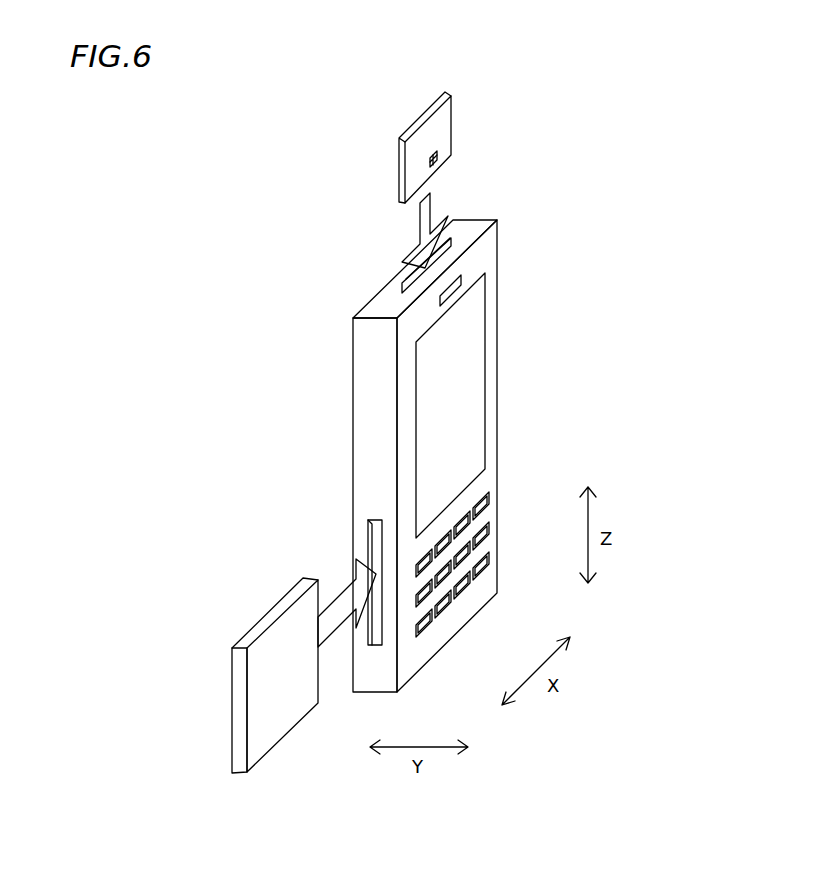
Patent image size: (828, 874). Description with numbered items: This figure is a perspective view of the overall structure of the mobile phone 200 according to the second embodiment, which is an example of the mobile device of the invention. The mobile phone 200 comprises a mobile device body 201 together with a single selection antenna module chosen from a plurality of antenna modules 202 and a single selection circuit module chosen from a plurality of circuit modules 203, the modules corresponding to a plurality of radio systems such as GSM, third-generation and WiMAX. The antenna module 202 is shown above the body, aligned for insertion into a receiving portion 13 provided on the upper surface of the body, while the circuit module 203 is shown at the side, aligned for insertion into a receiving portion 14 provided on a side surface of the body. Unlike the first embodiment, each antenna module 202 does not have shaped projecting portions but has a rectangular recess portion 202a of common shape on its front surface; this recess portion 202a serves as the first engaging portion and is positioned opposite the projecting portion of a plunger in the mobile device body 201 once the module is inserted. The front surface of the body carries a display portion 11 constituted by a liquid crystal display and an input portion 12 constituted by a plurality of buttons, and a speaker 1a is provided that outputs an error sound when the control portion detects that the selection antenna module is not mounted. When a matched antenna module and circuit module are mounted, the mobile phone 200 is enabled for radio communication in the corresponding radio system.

The mobile phone 200 is at (608, 102).
The mobile device body 201 is at (489, 259).
The antenna module 202 is at (443, 133).
The recess portion 202a is at (440, 158).
The circuit module 203 is at (232, 718).
The speaker 1a is at (453, 287).
The display portion 11 is at (470, 393).
The input portion 12 is at (488, 502).
The receiving portion 13 is at (403, 283).
The receiving portion 14 is at (378, 521).